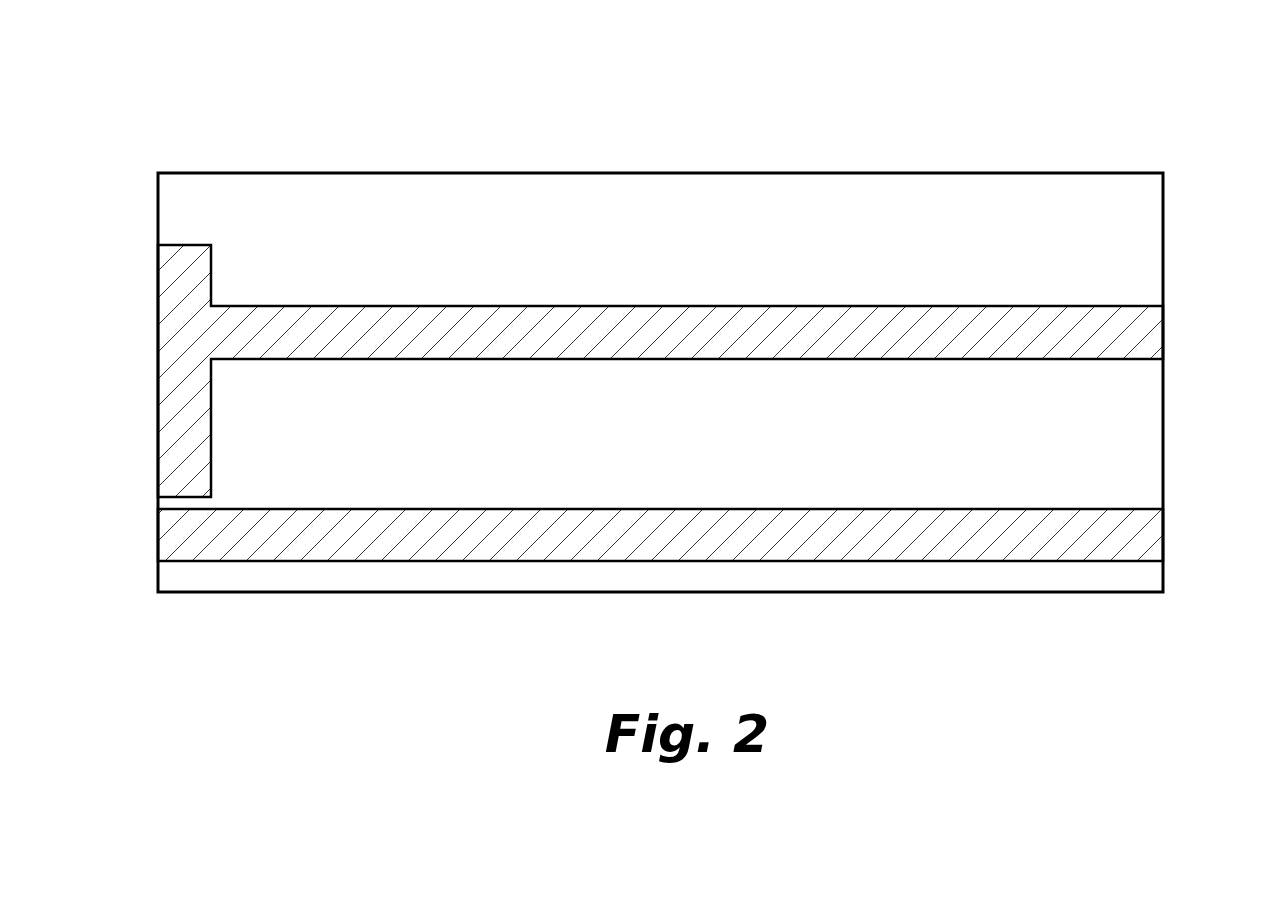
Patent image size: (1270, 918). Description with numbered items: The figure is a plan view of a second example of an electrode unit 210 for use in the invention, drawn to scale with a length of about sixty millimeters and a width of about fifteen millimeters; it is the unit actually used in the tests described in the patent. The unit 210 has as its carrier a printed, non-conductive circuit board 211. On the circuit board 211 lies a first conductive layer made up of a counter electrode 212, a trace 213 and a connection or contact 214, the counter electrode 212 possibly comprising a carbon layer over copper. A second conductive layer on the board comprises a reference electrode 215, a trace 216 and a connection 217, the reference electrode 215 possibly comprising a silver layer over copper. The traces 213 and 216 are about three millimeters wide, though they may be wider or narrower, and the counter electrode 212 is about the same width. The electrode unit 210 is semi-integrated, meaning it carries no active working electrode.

The electrode unit 210 is at (766, 124).
The printed circuit board 211 is at (942, 232).
The counter electrode 212 is at (183, 423).
The trace 213 is at (703, 333).
The connection or contact 214 is at (1135, 333).
The reference electrode 215 is at (182, 536).
The trace 216 is at (827, 533).
The connection 217 is at (1134, 532).